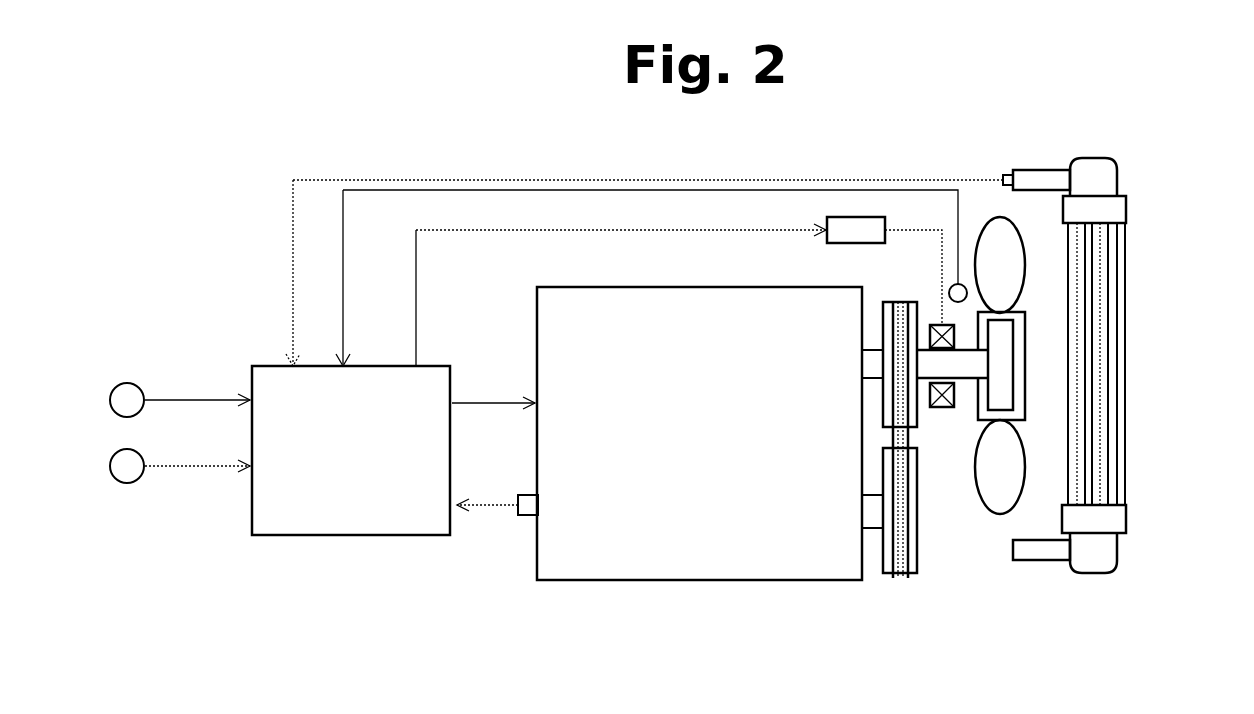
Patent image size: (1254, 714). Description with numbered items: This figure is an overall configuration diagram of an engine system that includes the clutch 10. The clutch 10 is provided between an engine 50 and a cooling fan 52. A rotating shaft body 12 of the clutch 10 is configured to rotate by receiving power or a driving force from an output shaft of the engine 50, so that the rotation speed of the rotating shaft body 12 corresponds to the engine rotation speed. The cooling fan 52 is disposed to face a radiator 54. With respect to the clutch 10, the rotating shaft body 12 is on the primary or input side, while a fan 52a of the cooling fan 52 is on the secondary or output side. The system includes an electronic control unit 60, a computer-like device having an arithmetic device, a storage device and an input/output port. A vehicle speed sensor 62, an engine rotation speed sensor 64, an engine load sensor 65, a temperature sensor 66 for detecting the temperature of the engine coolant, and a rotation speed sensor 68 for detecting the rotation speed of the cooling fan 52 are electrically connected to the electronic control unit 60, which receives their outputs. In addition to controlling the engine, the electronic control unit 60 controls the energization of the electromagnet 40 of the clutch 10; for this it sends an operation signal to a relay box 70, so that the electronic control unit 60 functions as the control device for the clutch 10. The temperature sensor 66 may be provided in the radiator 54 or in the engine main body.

The clutch 10 is at (1059, 370).
The rotating shaft body 12 is at (963, 373).
The electromagnet 40 is at (1013, 340).
The engine 50 is at (697, 582).
The cooling fan 52 is at (980, 518).
The fan 52a is at (1010, 290).
The radiator 54 is at (1108, 240).
The electronic control unit 60 is at (320, 527).
The vehicle speed sensor 62 is at (124, 483).
The engine rotation speed sensor 64 is at (521, 518).
The engine load sensor 65 is at (122, 383).
The temperature sensor 66 is at (1003, 173).
The rotation speed sensor 68 is at (967, 290).
The relay box 70 is at (857, 245).